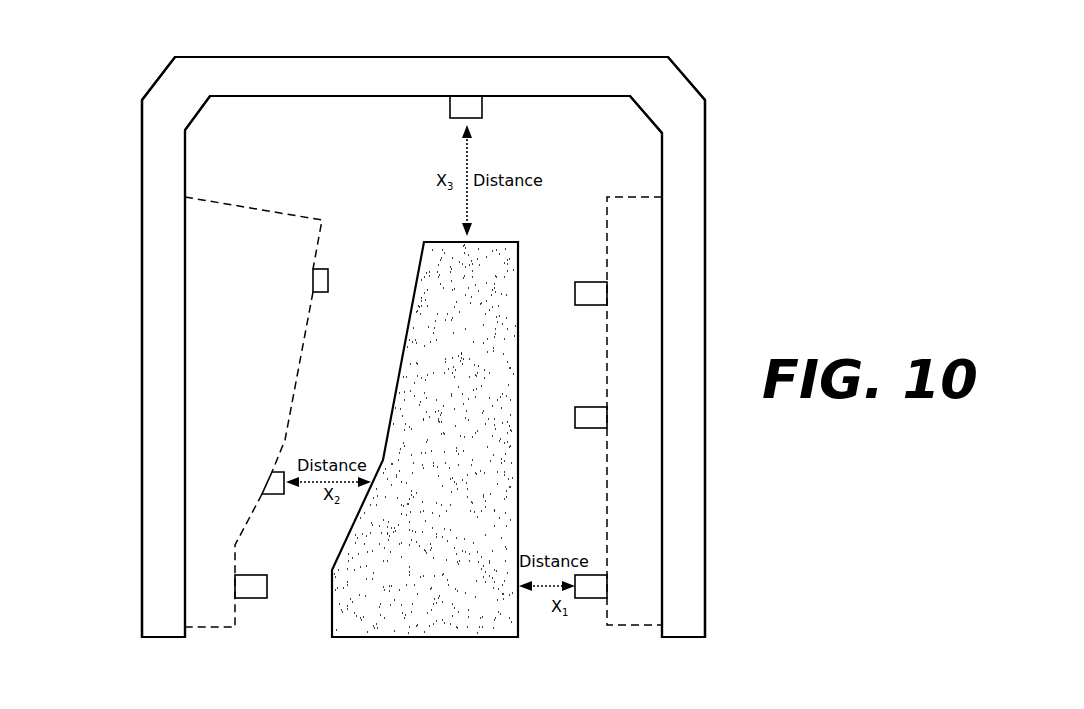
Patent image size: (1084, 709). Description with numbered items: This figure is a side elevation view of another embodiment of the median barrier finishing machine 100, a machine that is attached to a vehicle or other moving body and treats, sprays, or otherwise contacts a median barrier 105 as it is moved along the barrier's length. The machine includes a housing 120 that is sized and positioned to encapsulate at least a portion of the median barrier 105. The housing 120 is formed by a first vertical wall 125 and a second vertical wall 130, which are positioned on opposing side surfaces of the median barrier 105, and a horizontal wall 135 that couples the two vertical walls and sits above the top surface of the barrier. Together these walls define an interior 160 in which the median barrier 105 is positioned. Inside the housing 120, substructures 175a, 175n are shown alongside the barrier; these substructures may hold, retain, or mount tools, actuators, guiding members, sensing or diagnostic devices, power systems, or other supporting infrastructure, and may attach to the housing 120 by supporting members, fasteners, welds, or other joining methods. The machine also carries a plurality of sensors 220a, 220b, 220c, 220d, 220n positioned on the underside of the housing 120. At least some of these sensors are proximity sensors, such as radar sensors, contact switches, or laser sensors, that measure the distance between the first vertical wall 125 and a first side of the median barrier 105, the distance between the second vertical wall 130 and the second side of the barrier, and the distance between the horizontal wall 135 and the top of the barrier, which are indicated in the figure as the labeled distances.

The median barrier finishing machine 100 is at (115, 580).
The housing 120 is at (143, 155).
The horizontal wall 135 is at (300, 56).
The second vertical wall 130 is at (141, 287).
The first vertical wall 125 is at (706, 287).
The interior 160 is at (268, 159).
The substructure 175a is at (268, 342).
The substructure 175n is at (625, 427).
The median barrier 105 is at (472, 450).
The sensor 220a is at (329, 280).
The sensor 220b is at (280, 471).
The sensor 220c is at (251, 575).
The sensor 220d is at (483, 107).
The sensor 220n is at (574, 418).